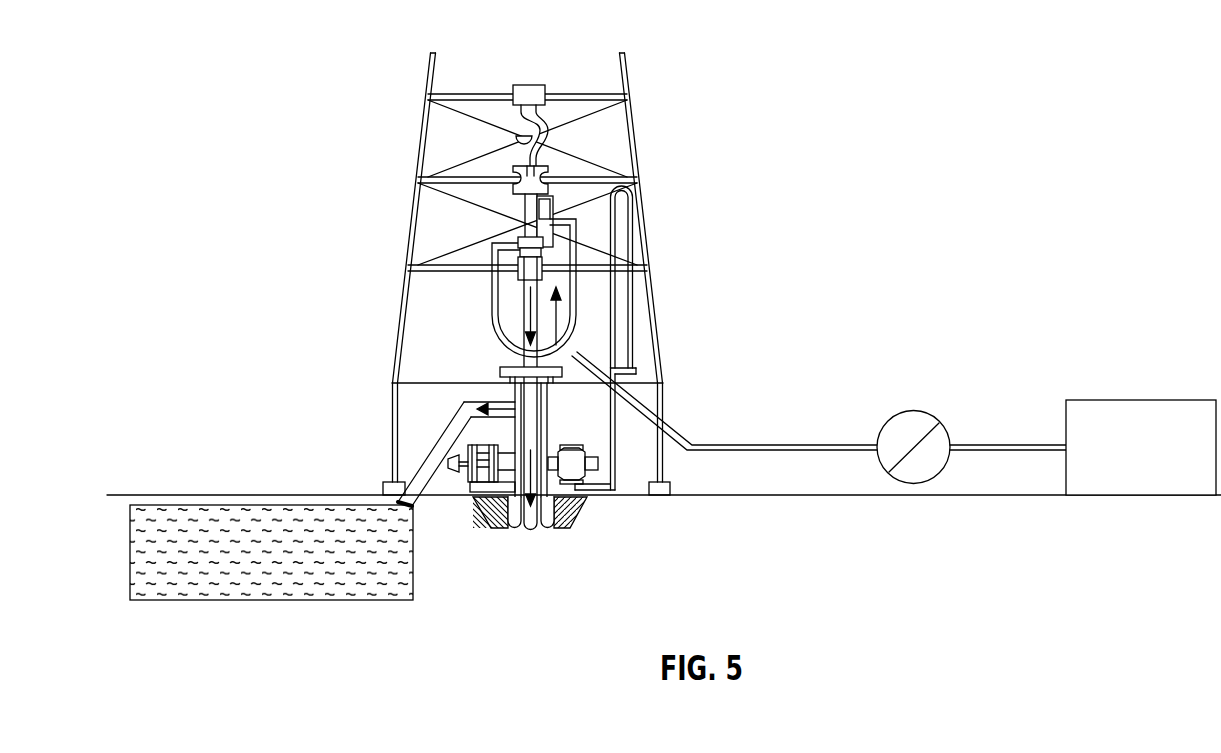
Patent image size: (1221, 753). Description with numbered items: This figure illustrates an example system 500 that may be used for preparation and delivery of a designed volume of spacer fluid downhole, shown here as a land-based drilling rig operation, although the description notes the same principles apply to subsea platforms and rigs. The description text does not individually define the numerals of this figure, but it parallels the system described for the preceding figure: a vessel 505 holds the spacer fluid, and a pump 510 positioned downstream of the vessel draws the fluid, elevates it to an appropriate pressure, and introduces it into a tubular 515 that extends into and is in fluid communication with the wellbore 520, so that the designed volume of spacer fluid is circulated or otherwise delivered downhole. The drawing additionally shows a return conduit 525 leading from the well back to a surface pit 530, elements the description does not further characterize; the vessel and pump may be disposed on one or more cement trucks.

The drilling system 500 is at (1062, 71).
The mud pump 505 is at (1137, 398).
The flow sensor 510 is at (914, 409).
The supply line 515 is at (681, 436).
The wellbore and drill bit 520 is at (560, 545).
The return line 525 is at (421, 509).
The mud pit 530 is at (130, 537).